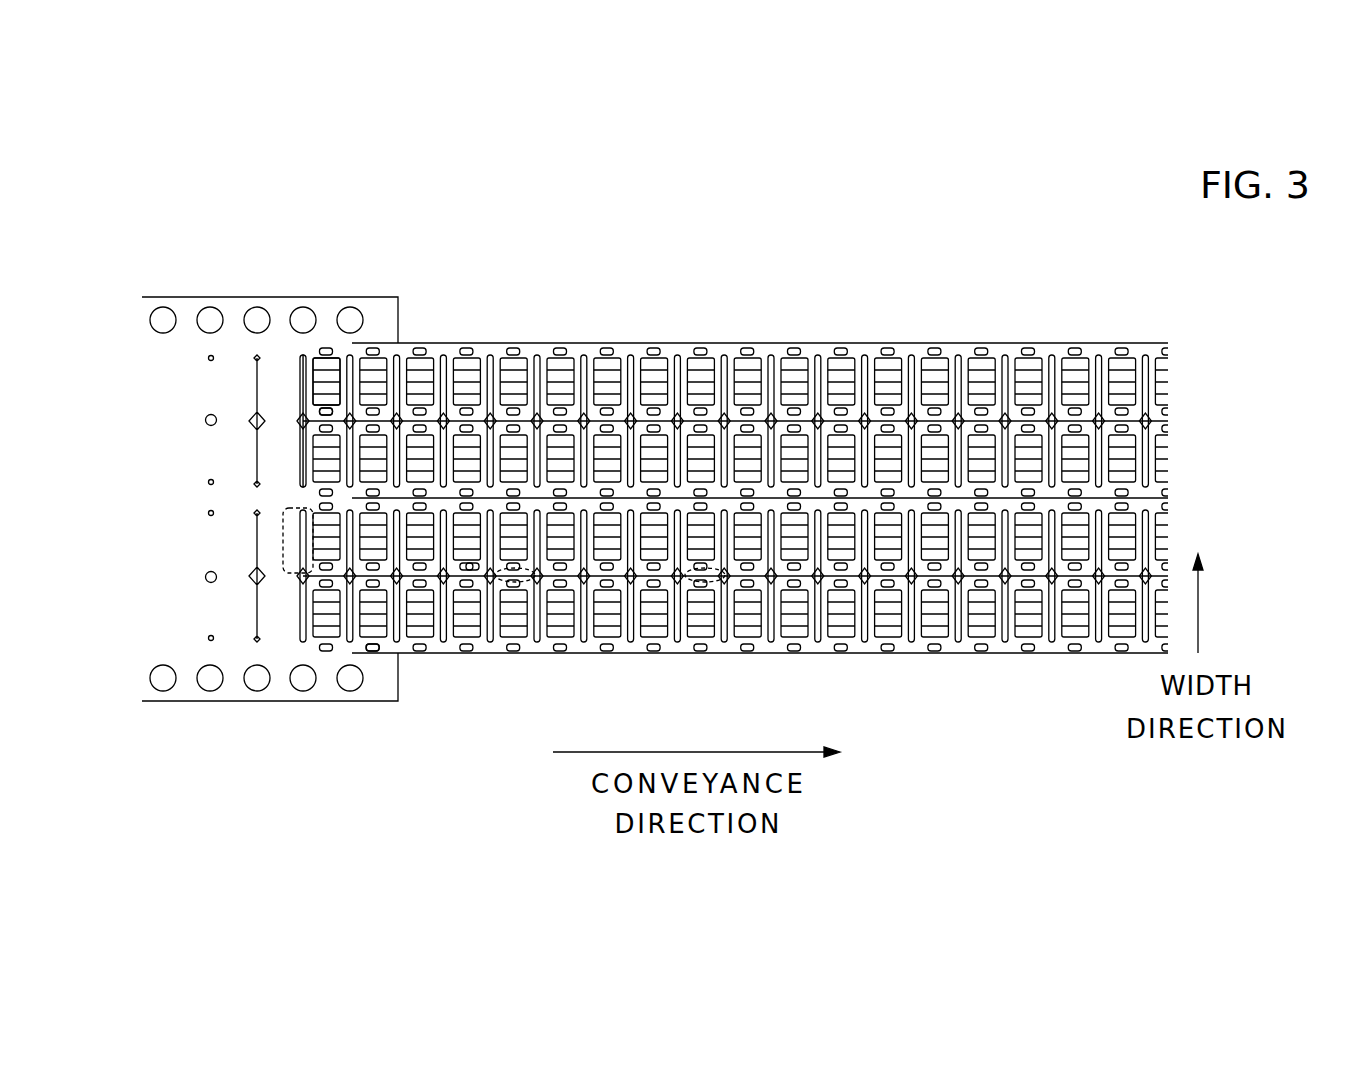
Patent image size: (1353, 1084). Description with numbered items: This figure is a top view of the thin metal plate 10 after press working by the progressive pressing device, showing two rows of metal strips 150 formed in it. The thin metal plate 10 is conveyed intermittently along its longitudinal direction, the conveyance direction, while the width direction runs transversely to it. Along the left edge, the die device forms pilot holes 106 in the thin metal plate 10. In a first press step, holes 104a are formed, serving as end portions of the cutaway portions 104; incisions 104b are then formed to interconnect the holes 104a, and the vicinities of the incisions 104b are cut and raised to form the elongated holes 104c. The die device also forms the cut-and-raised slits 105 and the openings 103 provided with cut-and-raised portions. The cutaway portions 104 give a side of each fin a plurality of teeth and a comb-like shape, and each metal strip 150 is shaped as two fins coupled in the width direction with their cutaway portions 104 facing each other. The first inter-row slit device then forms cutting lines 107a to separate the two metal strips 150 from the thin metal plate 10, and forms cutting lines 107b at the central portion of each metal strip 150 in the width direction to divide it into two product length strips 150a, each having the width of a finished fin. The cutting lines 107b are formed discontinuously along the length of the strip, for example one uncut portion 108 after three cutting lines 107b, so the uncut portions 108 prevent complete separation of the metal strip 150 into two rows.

The thin metal plate 10 is at (178, 382).
The openings 103 is at (330, 386).
The cutaway portions 104 is at (283, 540).
The holes 104a is at (212, 357).
The incisions 104b is at (261, 362).
The elongated holes 104c is at (312, 375).
The cut-and-raised slits 105 is at (298, 365).
The pilot holes 106 is at (172, 313).
The cutting lines 107a is at (390, 498).
The cutting lines 107b is at (472, 580).
The uncut portions 108 is at (706, 576).
The metal strips 150 is at (791, 419).
The product length strips 150a is at (790, 418).